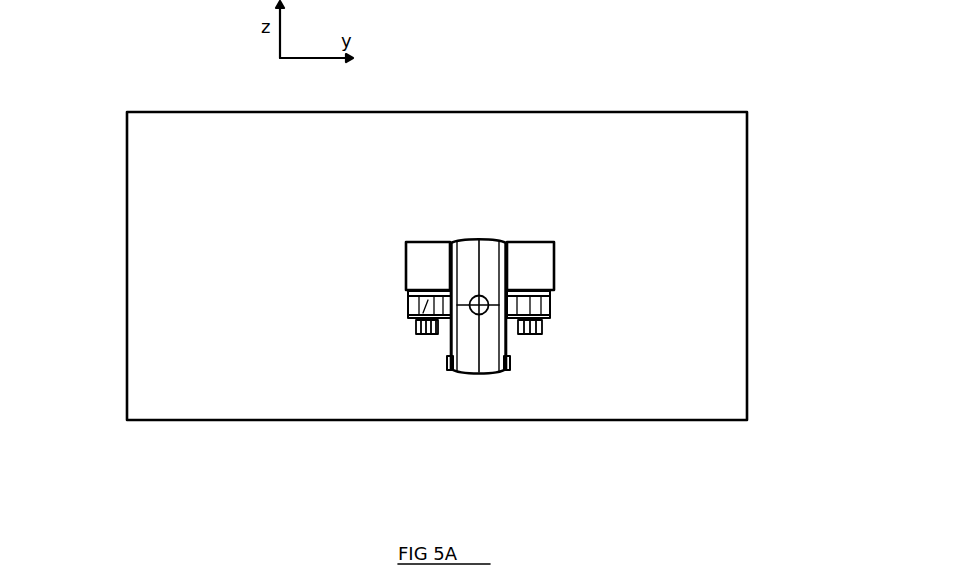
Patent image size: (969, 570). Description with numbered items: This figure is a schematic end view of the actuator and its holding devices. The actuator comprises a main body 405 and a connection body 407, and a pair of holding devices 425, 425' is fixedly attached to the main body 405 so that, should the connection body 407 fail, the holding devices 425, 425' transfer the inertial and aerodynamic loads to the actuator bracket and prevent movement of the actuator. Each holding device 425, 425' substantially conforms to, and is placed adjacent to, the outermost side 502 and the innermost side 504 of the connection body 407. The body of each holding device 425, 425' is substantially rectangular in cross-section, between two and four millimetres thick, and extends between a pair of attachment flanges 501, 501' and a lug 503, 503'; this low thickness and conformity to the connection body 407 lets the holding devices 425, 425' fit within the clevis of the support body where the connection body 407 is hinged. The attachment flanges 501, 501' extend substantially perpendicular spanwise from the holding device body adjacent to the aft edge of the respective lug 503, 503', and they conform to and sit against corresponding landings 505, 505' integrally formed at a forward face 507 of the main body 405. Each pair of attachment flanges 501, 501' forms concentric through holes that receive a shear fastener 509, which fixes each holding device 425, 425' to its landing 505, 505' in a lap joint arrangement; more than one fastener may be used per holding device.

The main body 405 is at (717, 110).
The connection body 407 is at (481, 372).
The holding device 425 is at (463, 220).
The holding device 425' is at (409, 220).
The attachment flange 501 is at (658, 318).
The attachment flange 501' is at (248, 313).
The outermost side 502 is at (500, 337).
The lug 503 is at (537, 407).
The lug 503' is at (460, 409).
The innermost side 504 is at (437, 336).
The landing 505 is at (618, 251).
The landing 505' is at (342, 267).
The forward face 507 is at (308, 230).
The shear fastener 509 is at (543, 328).